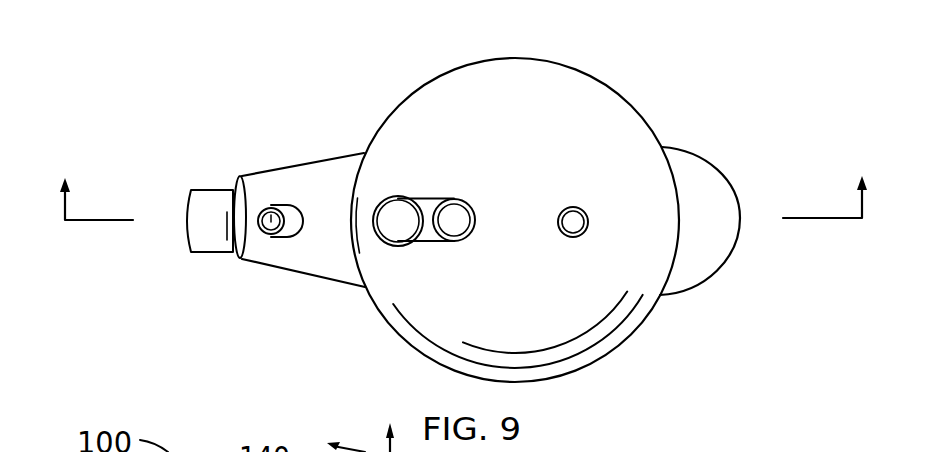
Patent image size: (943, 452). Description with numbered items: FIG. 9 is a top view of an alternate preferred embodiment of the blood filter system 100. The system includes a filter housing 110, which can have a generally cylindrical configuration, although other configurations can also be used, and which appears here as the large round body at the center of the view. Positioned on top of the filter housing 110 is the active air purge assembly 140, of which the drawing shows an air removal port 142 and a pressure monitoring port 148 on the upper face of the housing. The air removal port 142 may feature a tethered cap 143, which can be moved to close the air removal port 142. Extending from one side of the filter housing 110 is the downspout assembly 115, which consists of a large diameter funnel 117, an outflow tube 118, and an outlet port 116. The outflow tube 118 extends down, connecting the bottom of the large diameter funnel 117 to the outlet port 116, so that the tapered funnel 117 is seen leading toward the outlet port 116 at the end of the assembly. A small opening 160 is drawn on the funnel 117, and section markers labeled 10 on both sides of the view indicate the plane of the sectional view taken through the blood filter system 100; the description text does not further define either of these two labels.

The blood filter system 100 is at (250, 55).
The filter housing 110 is at (637, 113).
The downspout assembly 115 is at (240, 170).
The outlet port 116 is at (185, 222).
The large diameter funnel 117 is at (315, 280).
The outflow tube 118 is at (210, 255).
The active air purge assembly 140 is at (383, 333).
The air removal port 142 is at (454, 220).
The tethered cap 143 is at (398, 222).
The pressure monitoring port 148 is at (574, 222).
The aperture 160 is at (253, 176).
The section line 10 is at (463, 178).